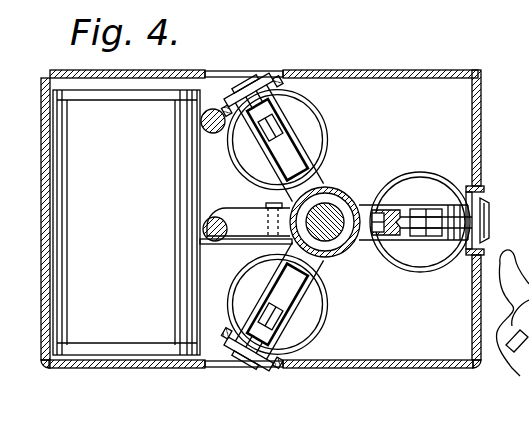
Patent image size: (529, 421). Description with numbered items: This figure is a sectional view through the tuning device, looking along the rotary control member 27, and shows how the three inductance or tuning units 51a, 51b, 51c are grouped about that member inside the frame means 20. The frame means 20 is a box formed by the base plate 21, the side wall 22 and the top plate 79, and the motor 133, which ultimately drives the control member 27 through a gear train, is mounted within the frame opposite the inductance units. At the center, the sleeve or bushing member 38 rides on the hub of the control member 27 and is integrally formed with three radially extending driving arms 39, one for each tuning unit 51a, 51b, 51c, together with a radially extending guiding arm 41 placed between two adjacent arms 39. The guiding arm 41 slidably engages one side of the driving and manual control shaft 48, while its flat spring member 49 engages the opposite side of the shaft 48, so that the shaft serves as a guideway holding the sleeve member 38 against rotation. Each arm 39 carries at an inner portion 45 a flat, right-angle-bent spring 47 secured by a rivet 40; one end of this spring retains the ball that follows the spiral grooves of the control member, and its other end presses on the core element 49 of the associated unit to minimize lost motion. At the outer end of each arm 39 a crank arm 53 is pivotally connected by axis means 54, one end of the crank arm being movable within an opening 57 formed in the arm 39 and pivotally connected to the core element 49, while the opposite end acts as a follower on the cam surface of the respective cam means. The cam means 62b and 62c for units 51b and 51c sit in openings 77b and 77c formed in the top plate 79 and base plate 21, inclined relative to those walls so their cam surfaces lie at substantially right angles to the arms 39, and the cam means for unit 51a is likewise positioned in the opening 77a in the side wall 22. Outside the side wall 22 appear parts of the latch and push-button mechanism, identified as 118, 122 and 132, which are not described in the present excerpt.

The frame means 20 is at (403, 70).
The base plate 21 is at (339, 0).
The side wall 22 is at (481, 128).
The rotary control member 27 is at (356, 200).
The sleeve or bushing member 38 is at (336, 190).
The driving arms 39 is at (254, 99).
The rivet 40 is at (279, 143).
The guiding arm 41 is at (226, 207).
The inner portion of arm 45 is at (376, 241).
The spring 47 is at (277, 139).
The driving and manual control shaft 48 is at (204, 233).
The flat spring member 49 is at (232, 244).
The tuning unit 51a is at (425, 168).
The tuning unit 51b is at (326, 118).
The tuning unit 51c is at (330, 320).
The crank arm 53 is at (428, 233).
The axis means 54 is at (489, 202).
The opening 57 is at (400, 258).
The cam means 62b is at (258, 70).
The cam means 62c is at (292, 336).
The opening 77a is at (468, 256).
The opening 77b is at (218, 71).
The opening 77c is at (217, 368).
The top plate 79 is at (317, 72).
The finger 118 is at (506, 319).
The handle 122 is at (519, 373).
The lever 132 is at (509, 253).
The motor 133 is at (126, 222).